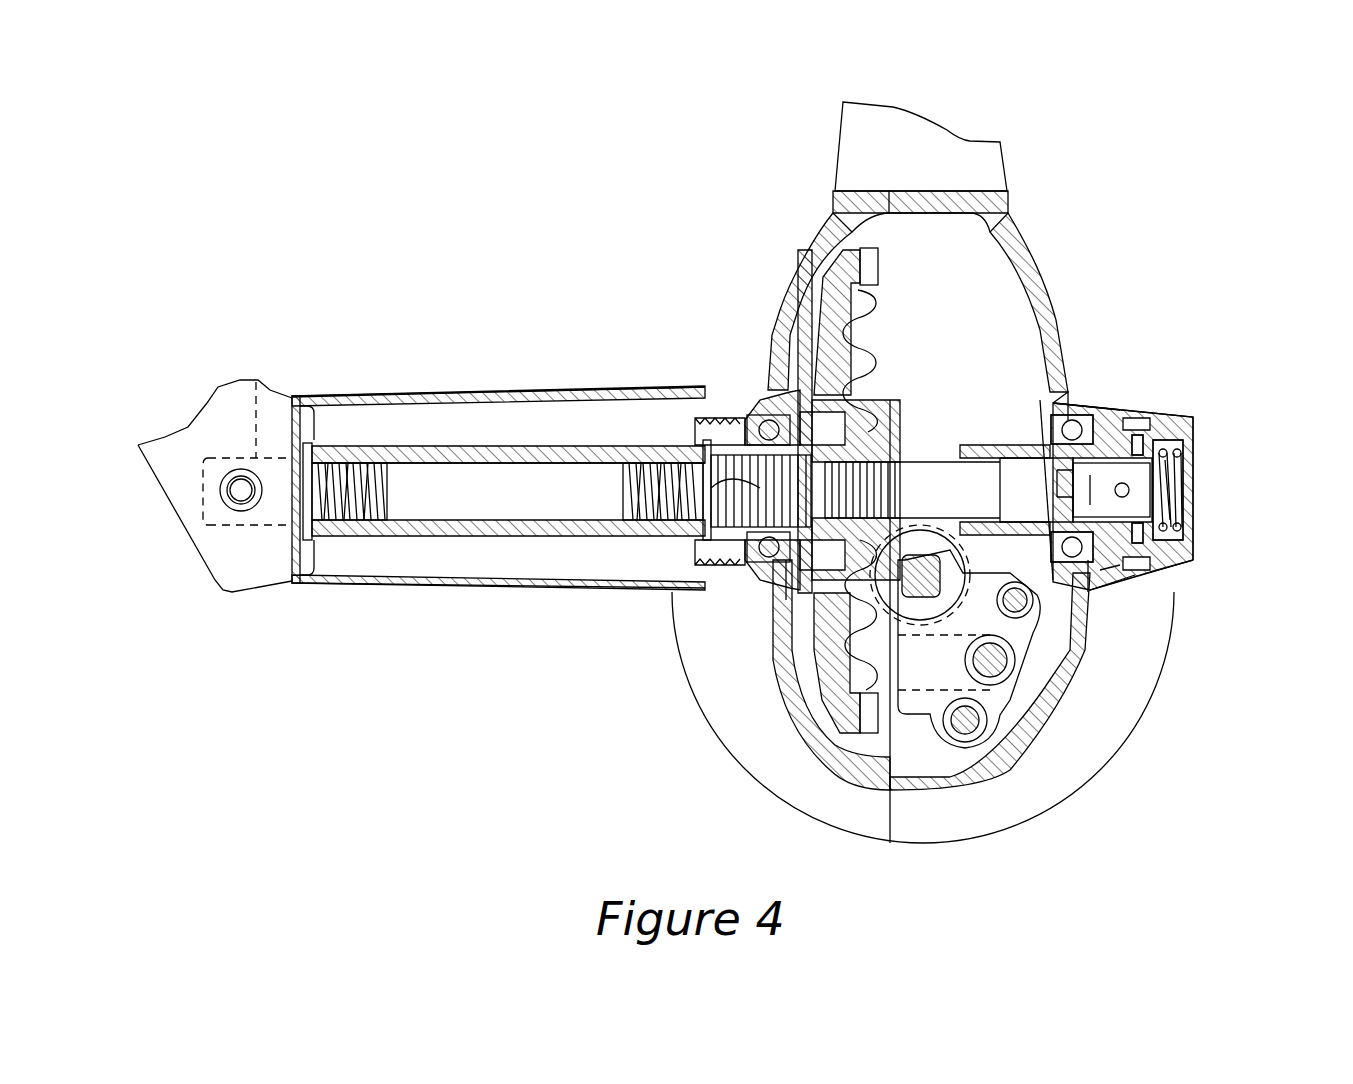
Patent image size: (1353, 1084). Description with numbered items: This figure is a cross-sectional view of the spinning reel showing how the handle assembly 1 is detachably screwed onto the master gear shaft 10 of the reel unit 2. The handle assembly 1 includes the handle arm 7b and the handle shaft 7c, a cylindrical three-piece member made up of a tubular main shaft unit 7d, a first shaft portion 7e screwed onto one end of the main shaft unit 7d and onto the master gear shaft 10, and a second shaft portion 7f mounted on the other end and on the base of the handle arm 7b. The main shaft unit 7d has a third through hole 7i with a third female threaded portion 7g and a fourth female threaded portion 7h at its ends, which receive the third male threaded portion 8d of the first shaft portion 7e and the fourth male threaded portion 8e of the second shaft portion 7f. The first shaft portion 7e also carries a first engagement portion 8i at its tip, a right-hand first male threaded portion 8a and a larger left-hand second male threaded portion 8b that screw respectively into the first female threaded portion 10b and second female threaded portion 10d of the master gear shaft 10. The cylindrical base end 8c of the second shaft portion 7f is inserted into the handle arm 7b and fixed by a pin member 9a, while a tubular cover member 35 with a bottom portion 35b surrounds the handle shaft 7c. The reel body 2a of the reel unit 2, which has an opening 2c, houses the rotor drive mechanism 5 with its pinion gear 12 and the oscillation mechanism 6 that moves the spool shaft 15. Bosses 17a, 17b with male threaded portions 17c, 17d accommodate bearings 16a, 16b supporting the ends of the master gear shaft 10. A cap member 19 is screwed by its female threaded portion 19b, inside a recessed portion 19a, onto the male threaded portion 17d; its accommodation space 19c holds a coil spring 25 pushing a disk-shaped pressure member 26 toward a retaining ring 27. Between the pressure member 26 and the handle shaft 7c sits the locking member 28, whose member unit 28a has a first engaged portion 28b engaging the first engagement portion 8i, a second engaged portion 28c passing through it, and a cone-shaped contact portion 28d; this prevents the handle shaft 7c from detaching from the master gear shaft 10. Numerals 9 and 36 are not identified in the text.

The handle assembly 1 is at (385, 318).
The reel unit 2 is at (1053, 263).
The reel body 2a is at (967, 787).
The opening 2c is at (873, 793).
The rotor drive mechanism 5 is at (895, 335).
The oscillation mechanism 6 is at (930, 753).
The handle arm 7b is at (180, 483).
The handle shaft 7c is at (512, 437).
The main shaft unit 7d is at (457, 527).
The first shaft portion 7e is at (673, 547).
The second shaft portion 7f is at (340, 547).
The third female threaded portion 7g is at (648, 460).
The fourth female threaded portion 7h is at (380, 465).
The third through hole 7i is at (432, 470).
The first male threaded portion 8a is at (865, 470).
The second male threaded portion 8b is at (733, 420).
The base end 8c is at (257, 380).
The third male threaded portion 8d is at (688, 455).
The fourth male threaded portion 8e is at (318, 460).
The first engagement portion 8i is at (1068, 490).
The bearing 9 is at (1032, 430).
The pin member 9a is at (232, 510).
The master gear shaft 10 is at (970, 448).
The first female threaded portion 10b is at (970, 503).
The second female threaded portion 10d is at (807, 520).
The pinion gear 12 is at (1047, 680).
The spool shaft 15 is at (932, 552).
The bearing 16a is at (1065, 410).
The bearing 16b is at (793, 587).
The boss 17a is at (1060, 407).
The boss 17b is at (753, 580).
The male threaded portion 17c is at (712, 418).
The male threaded portion 17d is at (1147, 600).
The cap member 19 is at (1190, 470).
The recessed portion 19a is at (1147, 570).
The female threaded portion 19b is at (1158, 408).
The accommodation space 19c is at (1170, 525).
The coil spring 25 is at (1197, 440).
The pressure member 26 is at (1165, 515).
The retaining ring 27 is at (1137, 553).
The locking member 28 is at (1175, 495).
The member unit 28a is at (1176, 520).
The first engaged portion 28b is at (1090, 560).
The second engaged portion 28c is at (1178, 480).
The contact portion 28d is at (1185, 500).
The cover member 35 is at (452, 392).
The bottom portion 35b is at (327, 567).
The retaining plate 36 is at (703, 543).